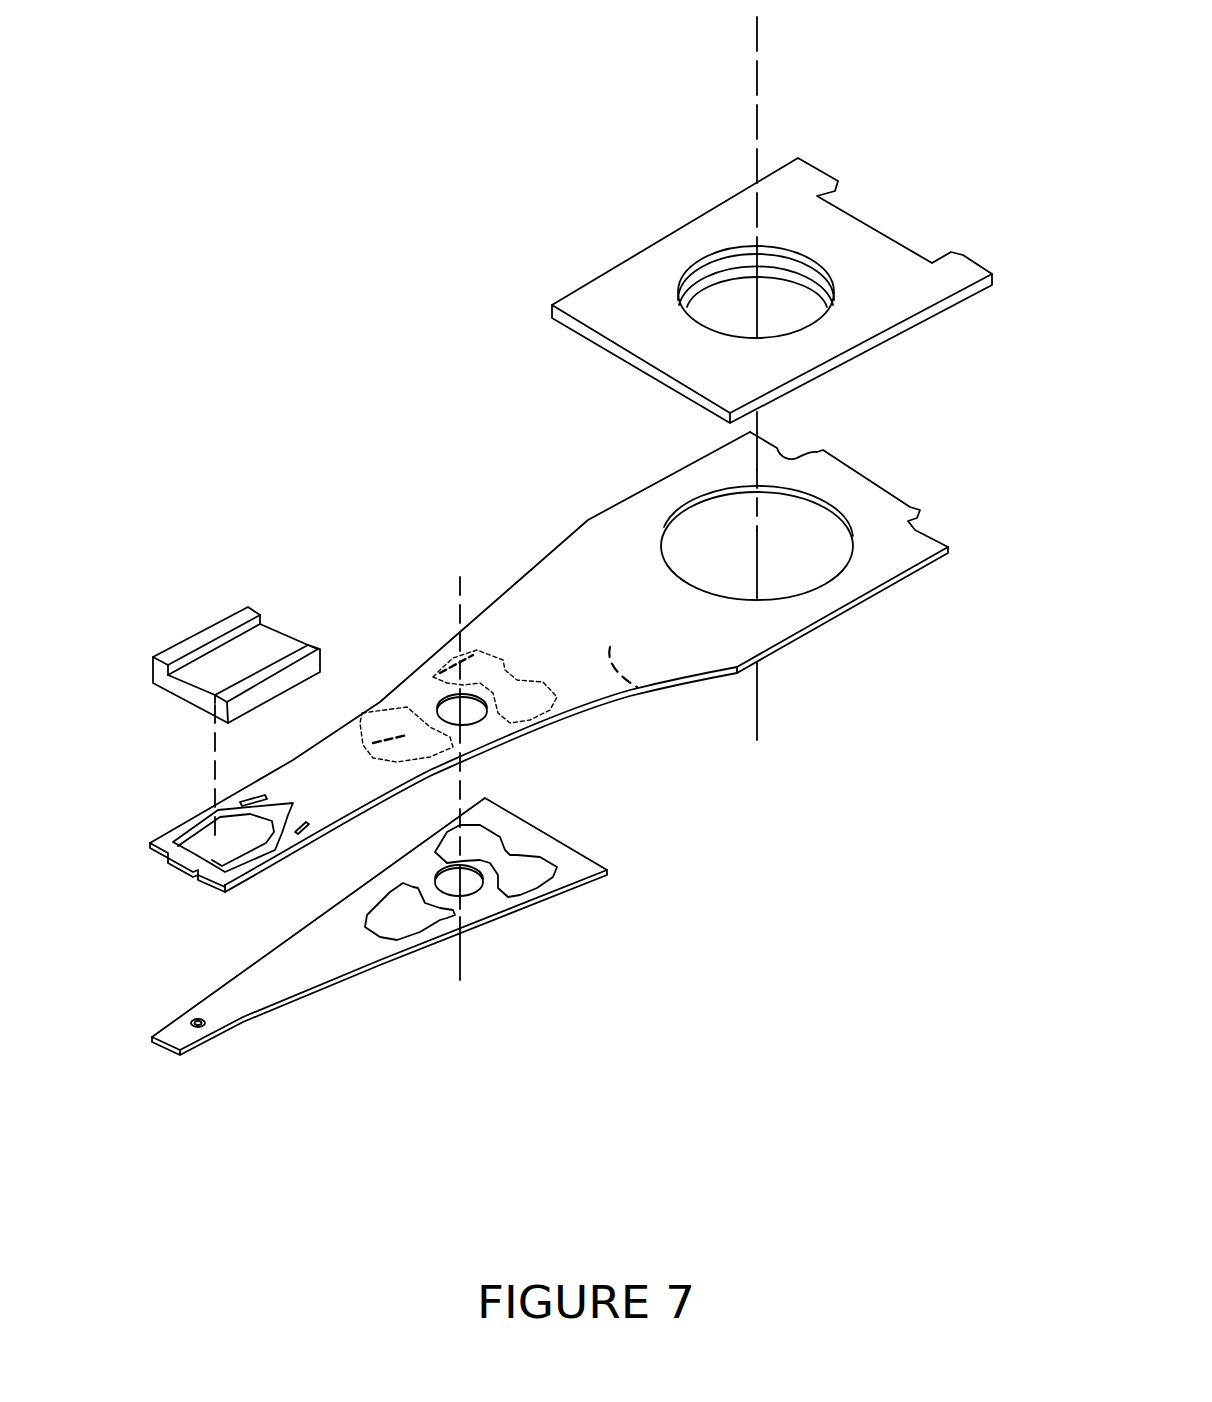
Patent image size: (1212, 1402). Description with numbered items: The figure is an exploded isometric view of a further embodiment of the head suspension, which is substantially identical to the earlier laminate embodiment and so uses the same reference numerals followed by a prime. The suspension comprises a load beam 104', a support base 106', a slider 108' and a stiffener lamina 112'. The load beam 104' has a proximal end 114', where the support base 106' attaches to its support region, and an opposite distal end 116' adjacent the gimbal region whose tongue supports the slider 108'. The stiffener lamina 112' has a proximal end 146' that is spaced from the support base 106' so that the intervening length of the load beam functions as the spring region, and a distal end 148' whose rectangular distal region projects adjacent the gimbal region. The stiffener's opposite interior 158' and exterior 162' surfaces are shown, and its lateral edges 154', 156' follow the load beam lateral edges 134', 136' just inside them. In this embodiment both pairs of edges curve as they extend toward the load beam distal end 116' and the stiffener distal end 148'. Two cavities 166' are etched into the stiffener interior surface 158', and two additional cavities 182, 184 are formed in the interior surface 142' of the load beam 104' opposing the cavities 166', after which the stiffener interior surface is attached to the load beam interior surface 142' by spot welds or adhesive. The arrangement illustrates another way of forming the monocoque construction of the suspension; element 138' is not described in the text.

The load beam 104' is at (450, 662).
The support base 106' is at (772, 241).
The slider 108' is at (236, 595).
The stiffener lamina 112' is at (379, 931).
The proximal end of load beam 114' is at (820, 519).
The distal end of load beam 116' is at (207, 875).
The lateral edge of load beam 134' is at (452, 613).
The lateral edge of load beam 136' is at (665, 724).
The rail edge 138' is at (783, 624).
The interior surface of load beam 142' is at (751, 728).
The proximal end of stiffener 146' is at (530, 833).
The distal end of stiffener 148' is at (166, 1079).
The lateral edge of stiffener 154' is at (382, 837).
The lateral edge of stiffener 156' is at (506, 918).
The interior surface of stiffener 158' is at (360, 911).
The exterior surface of stiffener 162' is at (352, 1016).
The cavities 166' is at (566, 933).
The cavity 182 is at (360, 713).
The cavity 184 is at (437, 672).